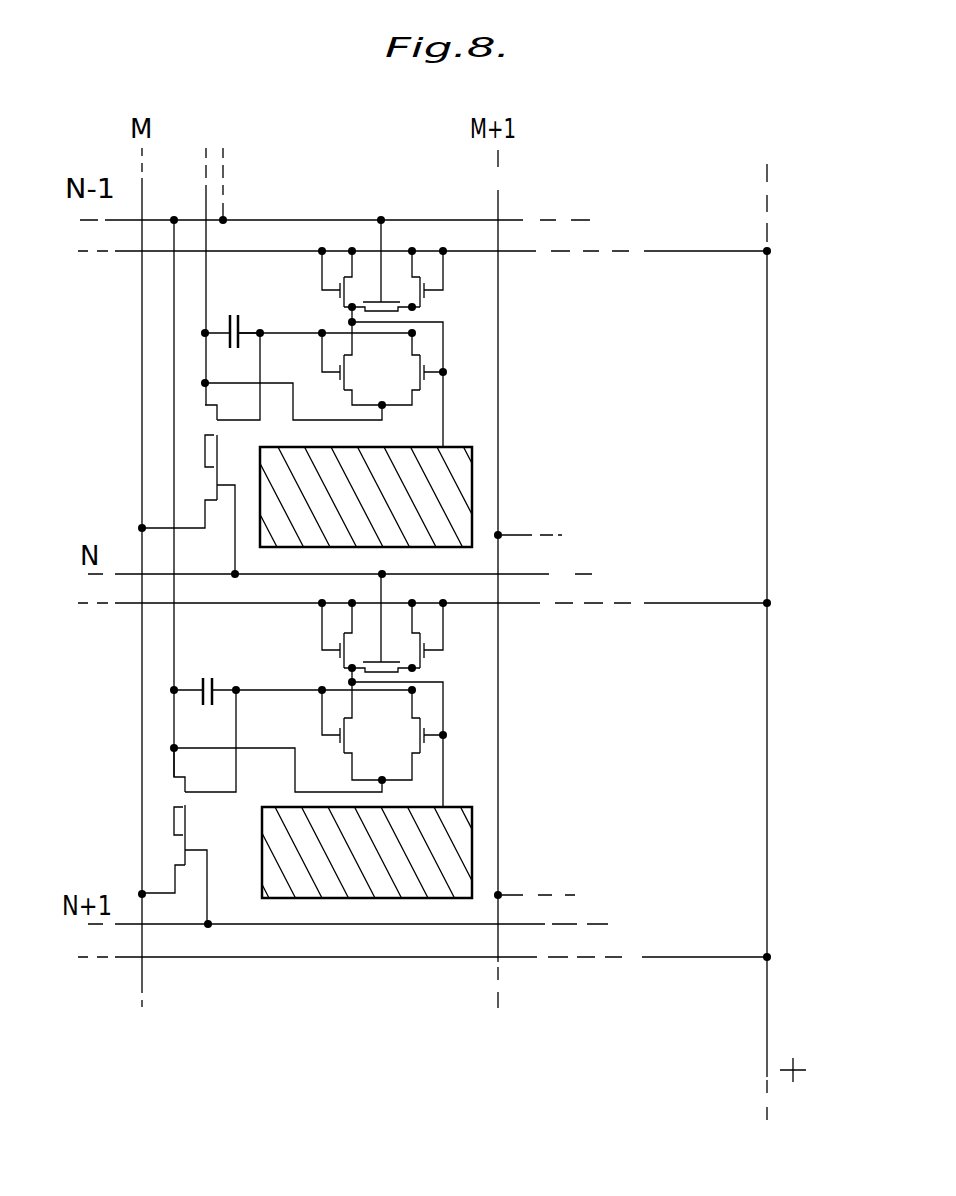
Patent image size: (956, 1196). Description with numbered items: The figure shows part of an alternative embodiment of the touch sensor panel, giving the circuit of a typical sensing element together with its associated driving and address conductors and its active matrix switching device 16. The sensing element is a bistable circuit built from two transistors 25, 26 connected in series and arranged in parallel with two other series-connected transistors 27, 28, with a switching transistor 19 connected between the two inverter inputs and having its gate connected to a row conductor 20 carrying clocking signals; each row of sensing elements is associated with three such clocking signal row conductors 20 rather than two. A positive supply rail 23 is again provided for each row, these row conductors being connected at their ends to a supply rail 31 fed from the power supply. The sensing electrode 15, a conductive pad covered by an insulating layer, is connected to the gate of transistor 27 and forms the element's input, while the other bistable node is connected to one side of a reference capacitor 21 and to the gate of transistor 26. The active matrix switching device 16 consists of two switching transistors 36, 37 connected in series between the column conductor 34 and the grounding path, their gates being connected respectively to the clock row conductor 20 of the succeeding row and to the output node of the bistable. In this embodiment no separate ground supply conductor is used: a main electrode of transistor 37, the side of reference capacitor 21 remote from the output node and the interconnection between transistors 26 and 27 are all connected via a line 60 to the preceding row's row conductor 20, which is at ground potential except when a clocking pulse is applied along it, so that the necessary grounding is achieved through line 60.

The sensing electrode 15 is at (463, 525).
The active matrix switching device 16 is at (224, 452).
The switching transistor 19 is at (392, 657).
The row conductor 20 is at (525, 220).
The reference capacitor 21 is at (218, 684).
The positive supply rail 23 is at (535, 255).
The transistor 25 is at (432, 655).
The transistor 26 is at (418, 733).
The transistor 27 is at (346, 736).
The transistor 28 is at (335, 655).
The supply rail 31 is at (767, 497).
The column conductor 34 is at (136, 166).
The switching transistor 36 is at (193, 843).
The switching transistor 37 is at (188, 787).
The line 60 is at (206, 197).